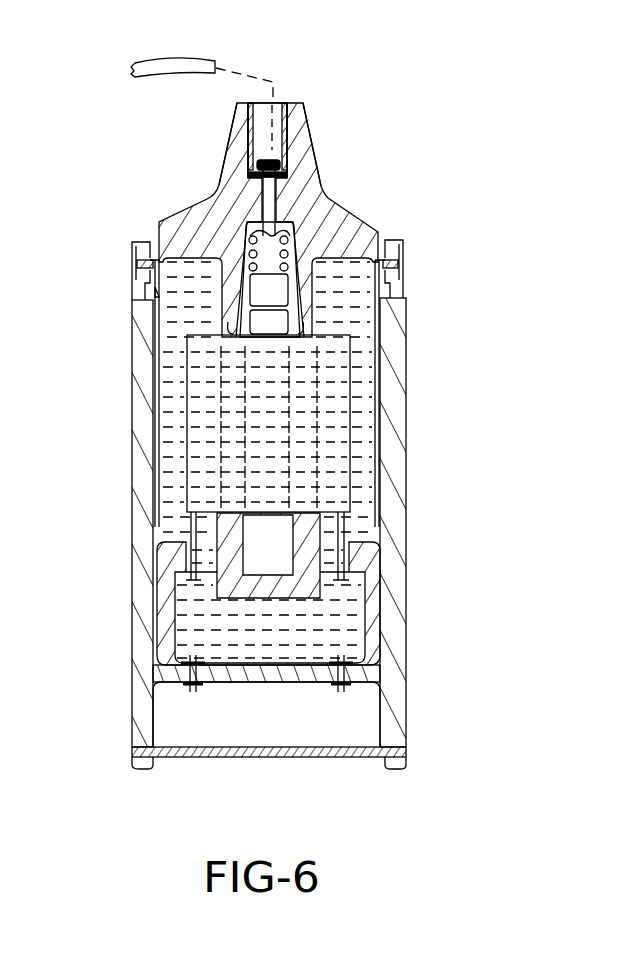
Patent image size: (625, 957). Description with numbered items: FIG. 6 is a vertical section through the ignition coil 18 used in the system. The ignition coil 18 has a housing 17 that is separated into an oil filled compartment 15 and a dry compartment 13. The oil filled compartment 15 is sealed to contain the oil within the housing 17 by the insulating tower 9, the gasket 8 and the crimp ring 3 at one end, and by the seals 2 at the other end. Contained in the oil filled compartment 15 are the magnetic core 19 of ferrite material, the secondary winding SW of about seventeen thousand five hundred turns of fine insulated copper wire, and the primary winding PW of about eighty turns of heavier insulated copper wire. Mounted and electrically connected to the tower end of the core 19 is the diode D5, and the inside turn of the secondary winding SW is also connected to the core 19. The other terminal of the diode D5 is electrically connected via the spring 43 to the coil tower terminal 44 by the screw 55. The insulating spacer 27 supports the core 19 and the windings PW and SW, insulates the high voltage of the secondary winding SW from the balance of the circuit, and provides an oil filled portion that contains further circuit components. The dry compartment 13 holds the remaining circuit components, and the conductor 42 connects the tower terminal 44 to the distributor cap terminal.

The conductor 42 is at (153, 58).
The coil tower terminal 44 is at (304, 108).
The insulating tower 9 is at (217, 188).
The gasket 8 is at (138, 243).
The crimp ring 3 is at (136, 266).
The magnetic core 19 is at (257, 325).
The screw 55 is at (290, 172).
The spring 43 is at (322, 217).
The diode D5 is at (282, 293).
The ignition coil 18 is at (428, 273).
The housing 17 is at (397, 360).
The oil filled compartment 15 is at (362, 417).
The secondary winding SW is at (308, 467).
The primary winding PW is at (337, 493).
The insulating spacer 27 is at (165, 590).
The seals 2 is at (380, 662).
The dry compartment 13 is at (360, 713).